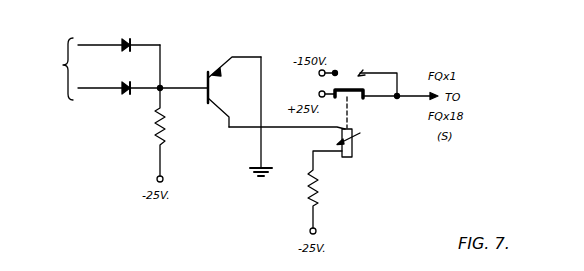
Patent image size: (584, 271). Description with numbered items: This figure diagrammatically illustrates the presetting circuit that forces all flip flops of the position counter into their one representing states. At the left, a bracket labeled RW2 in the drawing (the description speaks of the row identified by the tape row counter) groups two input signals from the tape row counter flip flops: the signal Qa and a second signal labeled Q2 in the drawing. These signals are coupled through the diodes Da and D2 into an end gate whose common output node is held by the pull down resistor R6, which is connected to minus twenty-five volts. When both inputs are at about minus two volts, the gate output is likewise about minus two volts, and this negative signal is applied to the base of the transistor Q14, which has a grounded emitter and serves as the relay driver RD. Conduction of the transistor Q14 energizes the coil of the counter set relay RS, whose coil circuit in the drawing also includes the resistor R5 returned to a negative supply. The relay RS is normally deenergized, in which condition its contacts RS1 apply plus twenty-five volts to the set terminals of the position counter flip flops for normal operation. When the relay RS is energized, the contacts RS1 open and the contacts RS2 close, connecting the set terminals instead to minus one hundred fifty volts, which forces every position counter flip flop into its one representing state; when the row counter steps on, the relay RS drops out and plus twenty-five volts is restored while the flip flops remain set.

The input bracket RW2 is at (43, 69).
The signal Qa is at (100, 37).
The input line Q2 is at (100, 79).
The diode Da is at (131, 41).
The diode D2 is at (138, 99).
The pull down resistor R6 is at (165, 118).
The transistor Q14 is at (229, 86).
The relay driver RD is at (255, 127).
The contacts RS1 is at (362, 99).
The contacts RS2 is at (379, 75).
The counter set relay RS is at (352, 143).
The resistor R5 is at (325, 192).